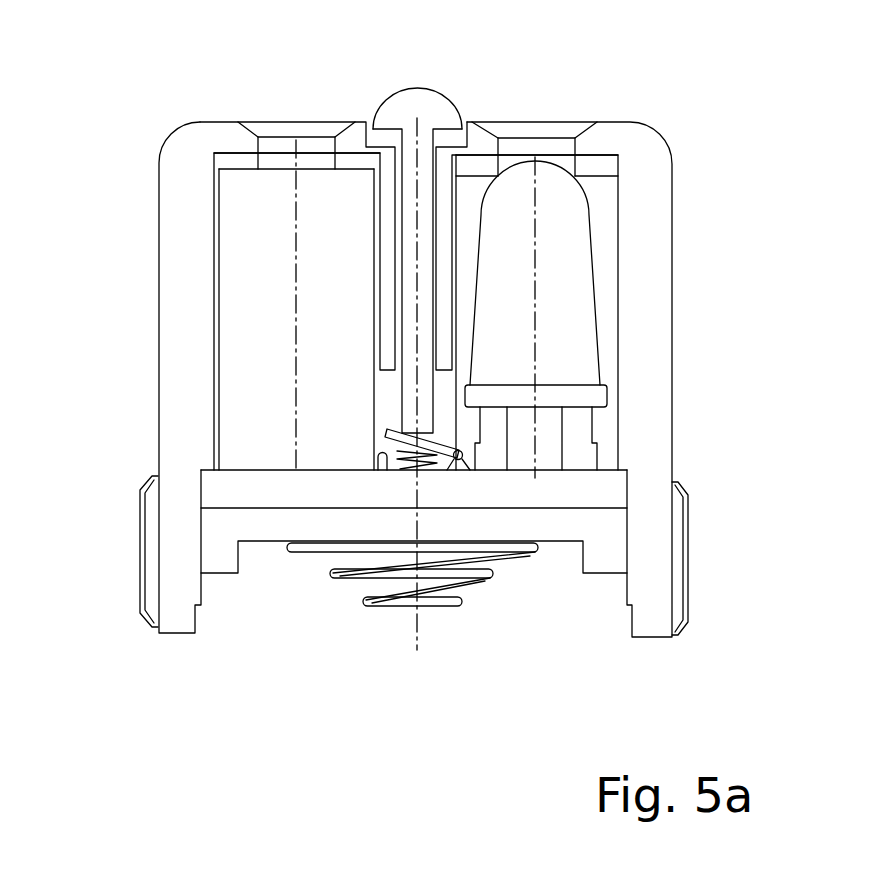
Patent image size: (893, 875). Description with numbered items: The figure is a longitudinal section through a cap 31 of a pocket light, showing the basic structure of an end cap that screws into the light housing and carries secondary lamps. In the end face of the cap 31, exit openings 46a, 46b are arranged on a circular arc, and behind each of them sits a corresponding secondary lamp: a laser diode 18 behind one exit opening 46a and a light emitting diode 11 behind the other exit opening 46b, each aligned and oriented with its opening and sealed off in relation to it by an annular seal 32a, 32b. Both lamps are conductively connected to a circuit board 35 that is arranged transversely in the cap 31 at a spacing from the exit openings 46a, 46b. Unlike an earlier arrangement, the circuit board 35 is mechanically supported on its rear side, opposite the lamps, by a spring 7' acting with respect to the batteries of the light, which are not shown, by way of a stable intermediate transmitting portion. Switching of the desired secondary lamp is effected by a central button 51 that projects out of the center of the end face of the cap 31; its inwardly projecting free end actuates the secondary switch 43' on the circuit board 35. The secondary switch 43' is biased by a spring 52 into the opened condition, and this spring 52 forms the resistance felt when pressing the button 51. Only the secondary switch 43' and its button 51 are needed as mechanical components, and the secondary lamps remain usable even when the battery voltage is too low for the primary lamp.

The cap 31 is at (178, 280).
The annular seal 32a is at (223, 159).
The annular seal 32b is at (602, 165).
The laser diode 18 is at (296, 305).
The exit opening 46a is at (270, 128).
The exit opening 46b is at (525, 128).
The central button 51 is at (405, 98).
The light emitting diode 11 is at (536, 317).
The circuit board 35 is at (217, 492).
The secondary switch 43' is at (603, 424).
The spring 52 is at (425, 460).
The spring 7' is at (412, 612).